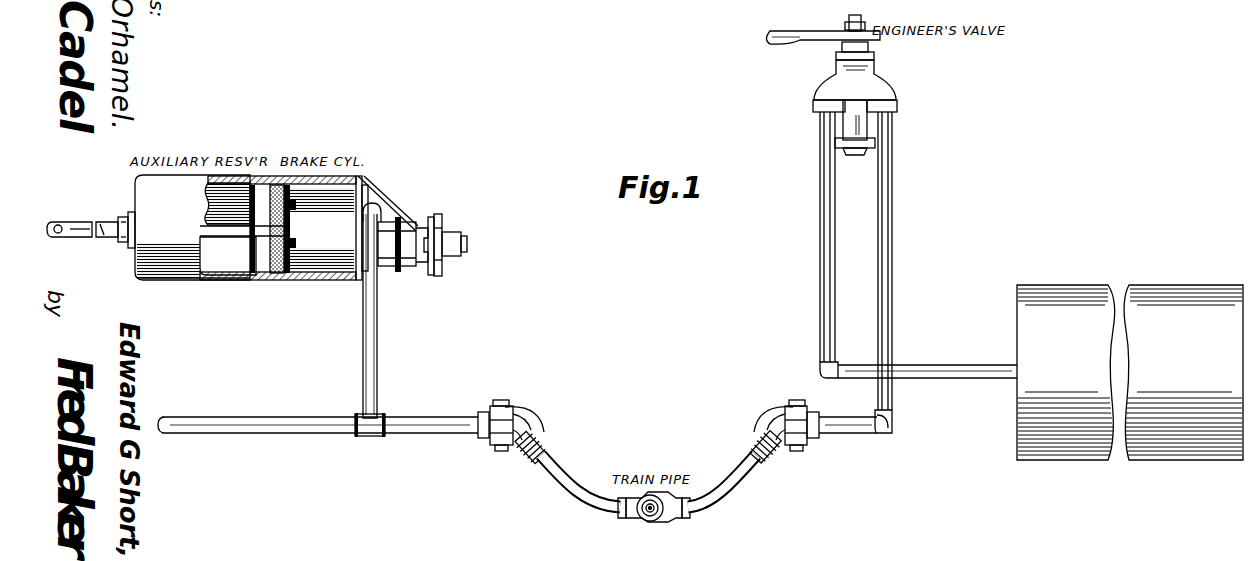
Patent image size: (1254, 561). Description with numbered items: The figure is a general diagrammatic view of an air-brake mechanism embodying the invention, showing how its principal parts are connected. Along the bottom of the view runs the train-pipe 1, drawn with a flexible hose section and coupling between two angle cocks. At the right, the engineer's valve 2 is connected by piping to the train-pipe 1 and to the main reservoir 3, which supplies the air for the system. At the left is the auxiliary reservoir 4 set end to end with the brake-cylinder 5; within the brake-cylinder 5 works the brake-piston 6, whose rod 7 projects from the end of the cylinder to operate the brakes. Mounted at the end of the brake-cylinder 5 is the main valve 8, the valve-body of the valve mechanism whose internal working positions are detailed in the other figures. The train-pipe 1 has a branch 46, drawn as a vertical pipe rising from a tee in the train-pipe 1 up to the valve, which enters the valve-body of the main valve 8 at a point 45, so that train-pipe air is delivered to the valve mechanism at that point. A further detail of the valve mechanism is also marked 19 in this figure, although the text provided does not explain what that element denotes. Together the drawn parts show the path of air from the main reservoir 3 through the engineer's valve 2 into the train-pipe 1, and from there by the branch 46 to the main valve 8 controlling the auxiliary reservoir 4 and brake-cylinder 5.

The train-pipe 1 is at (525, 457).
The engineer's valve 2 is at (892, 212).
The main reservoir 3 is at (1116, 372).
The auxiliary reservoir 4 is at (192, 227).
The brake-cylinder 5 is at (284, 228).
The brake-piston 6 is at (245, 230).
The rod 7 is at (91, 222).
The main valve 8 is at (441, 253).
The triple valve 19 is at (392, 250).
The point 45 is at (388, 213).
The branch 46 is at (380, 338).